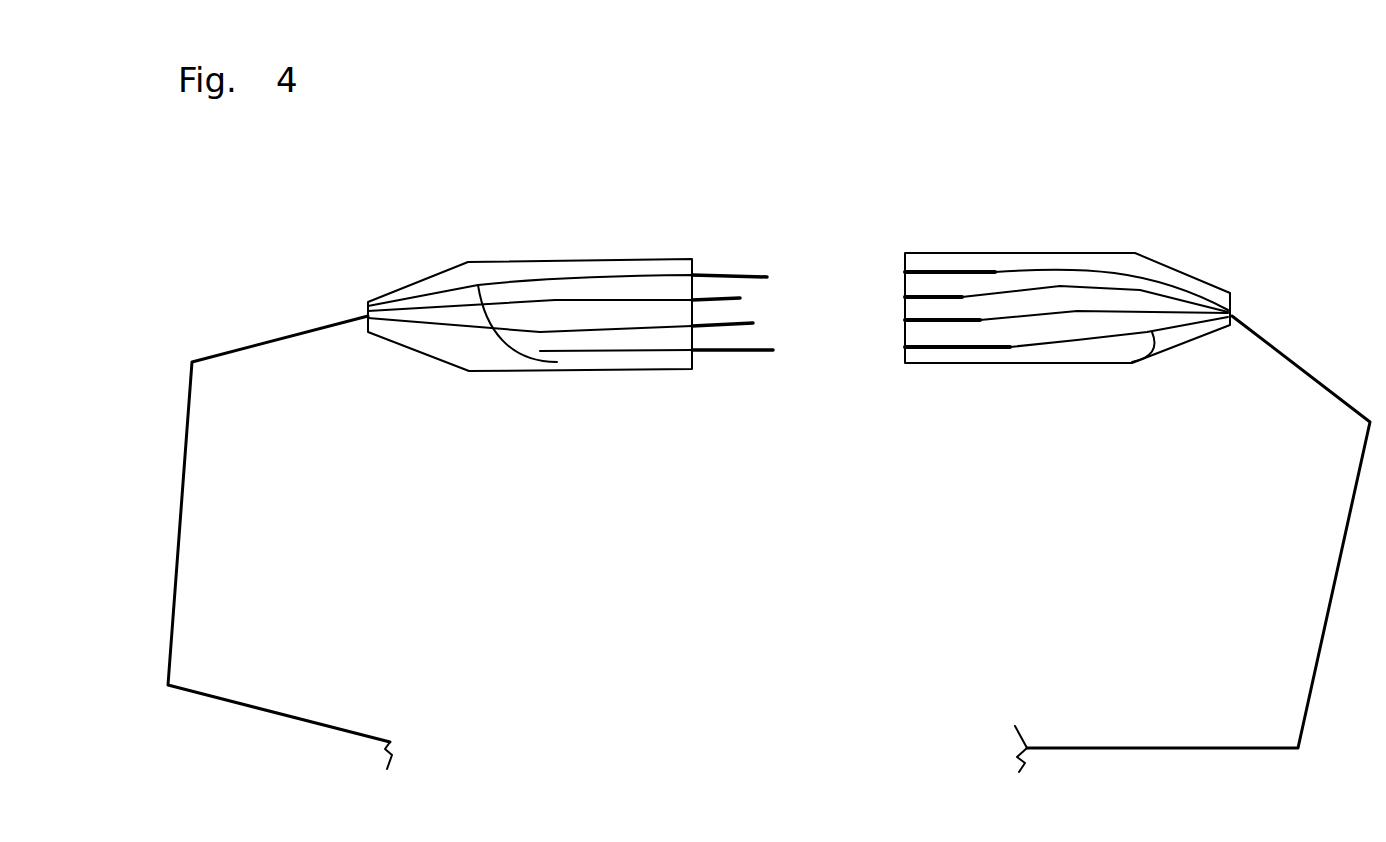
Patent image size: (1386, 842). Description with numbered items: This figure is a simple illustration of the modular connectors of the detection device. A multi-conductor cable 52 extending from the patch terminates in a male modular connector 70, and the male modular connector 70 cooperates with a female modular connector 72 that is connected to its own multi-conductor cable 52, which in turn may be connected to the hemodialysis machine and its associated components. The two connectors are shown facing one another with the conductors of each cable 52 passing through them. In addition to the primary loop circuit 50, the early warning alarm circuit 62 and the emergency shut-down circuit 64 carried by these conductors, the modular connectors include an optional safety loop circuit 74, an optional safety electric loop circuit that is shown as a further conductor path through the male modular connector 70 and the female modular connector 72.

The primary loop circuit 50 is at (513, 274).
The multi-conductor cable 52 is at (182, 618).
The early warning alarm circuit 62 is at (598, 303).
The emergency shut-down circuit 64 is at (560, 340).
The male modular connector 70 is at (1107, 248).
The female modular connector 72 is at (612, 253).
The safety loop circuit 74 is at (657, 352).